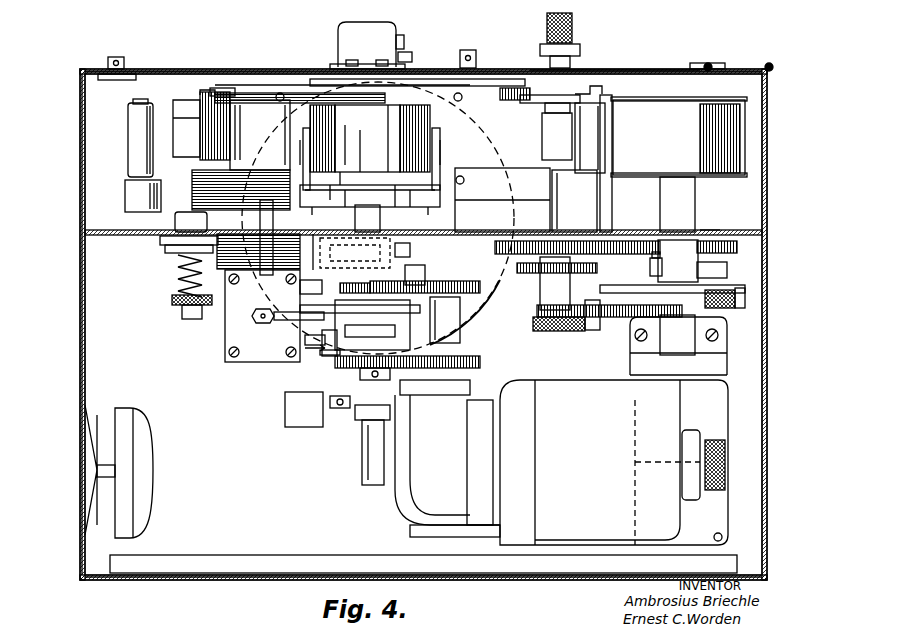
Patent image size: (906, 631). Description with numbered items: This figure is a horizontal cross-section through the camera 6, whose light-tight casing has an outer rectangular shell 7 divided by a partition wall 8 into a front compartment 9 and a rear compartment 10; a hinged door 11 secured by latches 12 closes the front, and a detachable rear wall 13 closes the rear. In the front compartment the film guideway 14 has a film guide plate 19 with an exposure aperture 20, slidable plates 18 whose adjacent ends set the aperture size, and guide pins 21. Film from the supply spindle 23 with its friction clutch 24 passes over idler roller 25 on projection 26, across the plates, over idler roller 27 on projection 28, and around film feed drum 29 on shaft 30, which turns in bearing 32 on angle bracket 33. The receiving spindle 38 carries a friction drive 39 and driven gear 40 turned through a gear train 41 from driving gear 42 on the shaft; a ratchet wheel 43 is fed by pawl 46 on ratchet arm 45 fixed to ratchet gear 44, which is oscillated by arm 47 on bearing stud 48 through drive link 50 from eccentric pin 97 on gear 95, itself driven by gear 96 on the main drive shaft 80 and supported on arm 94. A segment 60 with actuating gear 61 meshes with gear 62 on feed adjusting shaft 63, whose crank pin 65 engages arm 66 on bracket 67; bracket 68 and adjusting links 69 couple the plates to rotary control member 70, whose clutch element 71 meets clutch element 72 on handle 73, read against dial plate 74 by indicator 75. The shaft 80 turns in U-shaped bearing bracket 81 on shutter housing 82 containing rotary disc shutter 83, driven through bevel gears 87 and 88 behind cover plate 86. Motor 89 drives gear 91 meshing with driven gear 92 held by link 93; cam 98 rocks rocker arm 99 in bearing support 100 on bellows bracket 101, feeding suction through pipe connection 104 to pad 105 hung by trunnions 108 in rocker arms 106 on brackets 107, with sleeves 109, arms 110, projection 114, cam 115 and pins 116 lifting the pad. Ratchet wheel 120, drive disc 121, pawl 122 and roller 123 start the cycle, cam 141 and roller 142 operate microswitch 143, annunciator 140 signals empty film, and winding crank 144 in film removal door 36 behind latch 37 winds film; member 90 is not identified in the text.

The camera 6 is at (76, 292).
The outer rectangular shell 7 is at (75, 329).
The partition wall 8 is at (118, 229).
The front compartment 9 is at (95, 140).
The rear compartment 10 is at (92, 400).
The door 11 is at (153, 69).
The latches 12 is at (108, 58).
The detachable rear wall 13 is at (160, 578).
The film guideway 14 is at (260, 93).
The plates 18 is at (200, 136).
The film guide plate 19 is at (192, 100).
The exposure aperture 20 is at (343, 170).
The guide pins 21 is at (279, 101).
The spindle 23 is at (175, 218).
The friction clutch arrangement 24 is at (175, 255).
The idler roller 25 is at (128, 120).
The projection 26 is at (125, 185).
The idler roller 27 is at (580, 148).
The projection 28 is at (606, 195).
The film feed drum 29 is at (660, 100).
The shaft 30 is at (695, 200).
The bearing 32 is at (663, 355).
The angle bracket 33 is at (708, 362).
The film removal door 36 is at (625, 69).
The latch 37 is at (477, 55).
The spindle 38 is at (502, 199).
The friction drive disc structure 39 is at (537, 285).
The driven gear 40 is at (563, 222).
The train of gears 41 is at (612, 240).
The driving gear 42 is at (728, 250).
The ratchet wheel 43 is at (605, 306).
The ratchet gear 44 is at (650, 265).
The ratchet arm 45 is at (727, 285).
The ratchet pawl 46 is at (725, 308).
The arm 47 is at (680, 275).
The bearing stud 48 is at (700, 230).
The drive link 50 is at (640, 288).
The segment 60 is at (670, 358).
The actuating gear 61 is at (712, 325).
The gear 62 is at (608, 322).
The feed adjusting shaft 63 is at (575, 331).
The crank pin 65 is at (590, 94).
The arm 66 is at (562, 113).
The bracket 67 is at (545, 103).
The bracket 68 is at (215, 126).
The adjusting links 69 is at (225, 92).
The rotary control member 70 is at (404, 44).
The clutch element 71 is at (382, 60).
The clutch element 72 is at (358, 60).
The handle 73 is at (395, 30).
The dial plate 74 is at (412, 56).
The indicator 75 is at (327, 70).
The main drive shaft 80 is at (362, 462).
The U-shaped bearing bracket 81 is at (337, 345).
The shutter housing 82 is at (476, 316).
The rotary disc shutter 83 is at (270, 128).
The cover plate 86 is at (410, 250).
The bevel gear 87 is at (320, 248).
The bevel gear 88 is at (330, 262).
The electric motor 89 is at (560, 395).
The bracket 90 is at (412, 480).
The drive gear 91 is at (482, 362).
The driven gear 92 is at (320, 352).
The link 93 is at (425, 392).
The arm 94 is at (455, 318).
The gear 95 is at (455, 280).
The gear 96 is at (408, 270).
The eccentric pin 97 is at (430, 282).
The cam 98 is at (335, 290).
The rocker arm 99 is at (274, 314).
The bearing support 100 is at (300, 312).
The bellows-supporting bracket 101 is at (240, 328).
The pipe connection 104 is at (260, 218).
The pad 105 is at (400, 133).
The rocker arms 106 is at (303, 150).
The brackets 107 is at (305, 200).
The trunnions 108 is at (303, 150).
The sleeves 109 is at (375, 216).
The arms 110 is at (330, 185).
The projection 114 is at (363, 145).
The cam 115 is at (370, 151).
The pins 116 is at (360, 215).
The ratchet wheel 120 is at (392, 345).
The drive disc 121 is at (315, 335).
The main drive pawl 122 is at (304, 341).
The bearing roller 123 is at (395, 332).
The annunciator 140 is at (161, 498).
The cam 141 is at (362, 440).
The roller 142 is at (343, 408).
The microswitch 143 is at (305, 427).
The winding crank 144 is at (572, 48).